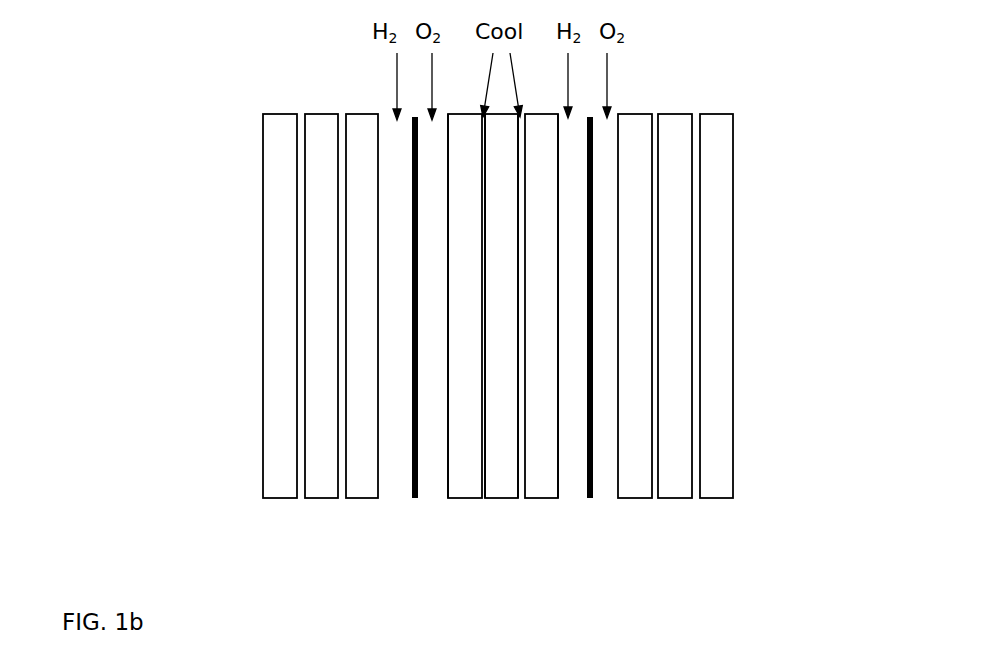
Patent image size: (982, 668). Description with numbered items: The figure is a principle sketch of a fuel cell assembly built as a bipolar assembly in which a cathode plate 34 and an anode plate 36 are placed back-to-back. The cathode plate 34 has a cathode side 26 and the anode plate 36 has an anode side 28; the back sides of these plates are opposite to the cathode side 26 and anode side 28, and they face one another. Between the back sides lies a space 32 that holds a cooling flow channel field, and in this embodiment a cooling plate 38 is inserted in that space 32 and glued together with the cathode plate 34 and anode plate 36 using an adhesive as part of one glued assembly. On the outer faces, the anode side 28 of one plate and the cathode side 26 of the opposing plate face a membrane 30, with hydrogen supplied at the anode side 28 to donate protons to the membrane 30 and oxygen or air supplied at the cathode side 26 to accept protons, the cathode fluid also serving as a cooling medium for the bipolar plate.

The cathode side 26 is at (415, 353).
The anode side 28 is at (597, 353).
The membrane 30 is at (603, 492).
The space 32 is at (484, 511).
The cathode plate 34 is at (460, 511).
The anode plate 36 is at (544, 510).
The cooling plate 38 is at (503, 511).